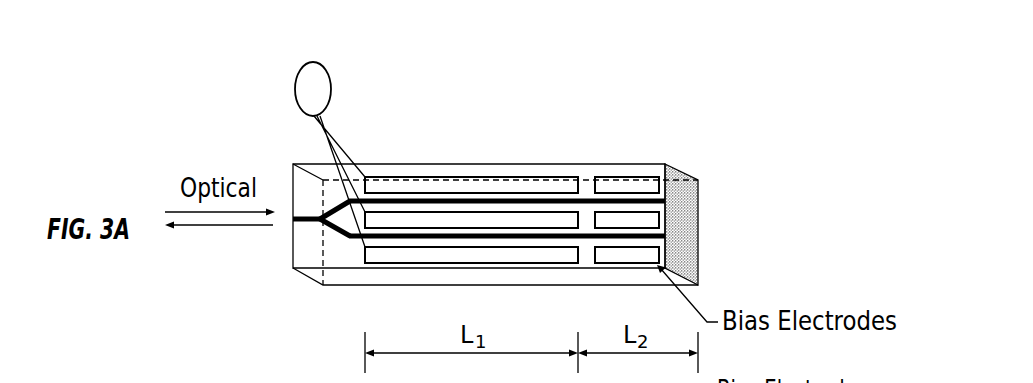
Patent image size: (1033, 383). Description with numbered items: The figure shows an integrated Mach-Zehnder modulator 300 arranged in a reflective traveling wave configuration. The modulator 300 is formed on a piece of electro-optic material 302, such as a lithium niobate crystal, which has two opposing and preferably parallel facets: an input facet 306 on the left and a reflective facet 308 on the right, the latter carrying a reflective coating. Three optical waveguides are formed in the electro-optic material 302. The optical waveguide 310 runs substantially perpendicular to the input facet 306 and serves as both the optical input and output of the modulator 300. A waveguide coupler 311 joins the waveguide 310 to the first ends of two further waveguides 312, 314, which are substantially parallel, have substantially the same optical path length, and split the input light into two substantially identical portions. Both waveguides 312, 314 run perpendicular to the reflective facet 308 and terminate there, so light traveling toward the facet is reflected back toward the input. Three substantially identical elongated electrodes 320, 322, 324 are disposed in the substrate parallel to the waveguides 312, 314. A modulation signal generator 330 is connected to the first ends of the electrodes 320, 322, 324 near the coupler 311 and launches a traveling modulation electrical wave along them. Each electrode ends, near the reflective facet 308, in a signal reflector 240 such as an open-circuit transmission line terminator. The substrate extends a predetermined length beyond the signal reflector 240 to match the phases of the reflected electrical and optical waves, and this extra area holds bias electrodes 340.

The Mach-Zehnder modulator 300 is at (460, 54).
The electro-optic material 302 is at (370, 164).
The input facet 306 is at (310, 280).
The reflective facet 308 is at (712, 223).
The optical waveguide 310 is at (306, 215).
The waveguide coupler 311 is at (318, 223).
The optical waveguide 312 is at (424, 201).
The optical waveguide 314 is at (413, 238).
The electrode 320 is at (501, 177).
The electrode 322 is at (491, 220).
The electrode 324 is at (555, 255).
The modulation signal generator 330 is at (313, 62).
The bias electrodes 340 is at (618, 177).
The signal reflector 240 is at (577, 170).